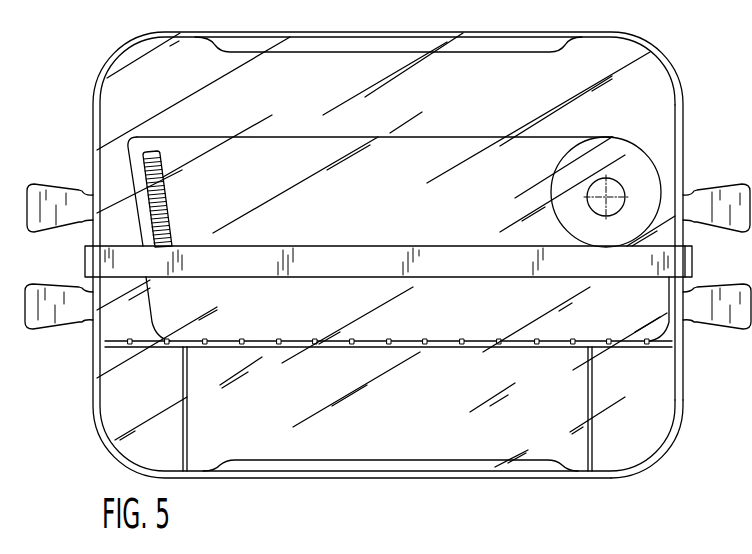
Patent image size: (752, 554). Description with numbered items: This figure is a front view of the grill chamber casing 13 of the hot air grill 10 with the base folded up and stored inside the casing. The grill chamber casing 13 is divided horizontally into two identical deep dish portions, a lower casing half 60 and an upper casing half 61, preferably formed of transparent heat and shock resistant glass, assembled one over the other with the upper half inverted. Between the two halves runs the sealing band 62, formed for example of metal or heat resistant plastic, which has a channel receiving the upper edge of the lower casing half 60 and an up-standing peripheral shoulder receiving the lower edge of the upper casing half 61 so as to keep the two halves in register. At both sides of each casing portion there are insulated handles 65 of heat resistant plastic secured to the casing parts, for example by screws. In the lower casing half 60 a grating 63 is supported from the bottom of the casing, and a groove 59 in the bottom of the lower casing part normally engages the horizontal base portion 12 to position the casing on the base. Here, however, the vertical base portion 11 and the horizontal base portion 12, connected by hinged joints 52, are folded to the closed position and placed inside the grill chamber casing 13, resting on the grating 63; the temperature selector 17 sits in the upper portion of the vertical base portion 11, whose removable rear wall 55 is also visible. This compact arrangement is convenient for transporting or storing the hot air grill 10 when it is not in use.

The hot air grill 10 is at (115, 42).
The vertical base portion 11 is at (212, 128).
The horizontal base portion 12 is at (404, 348).
The grill chamber casing 13 is at (657, 44).
The temperature selector 17 is at (148, 153).
The hinged joints 52 is at (624, 178).
The rear wall 55 is at (326, 137).
The groove 59 is at (452, 53).
The lower casing half 60 is at (682, 413).
The upper casing half 61 is at (680, 122).
The sealing band 62 is at (693, 258).
The grating 63 is at (505, 362).
The insulated handles 65 is at (47, 203).